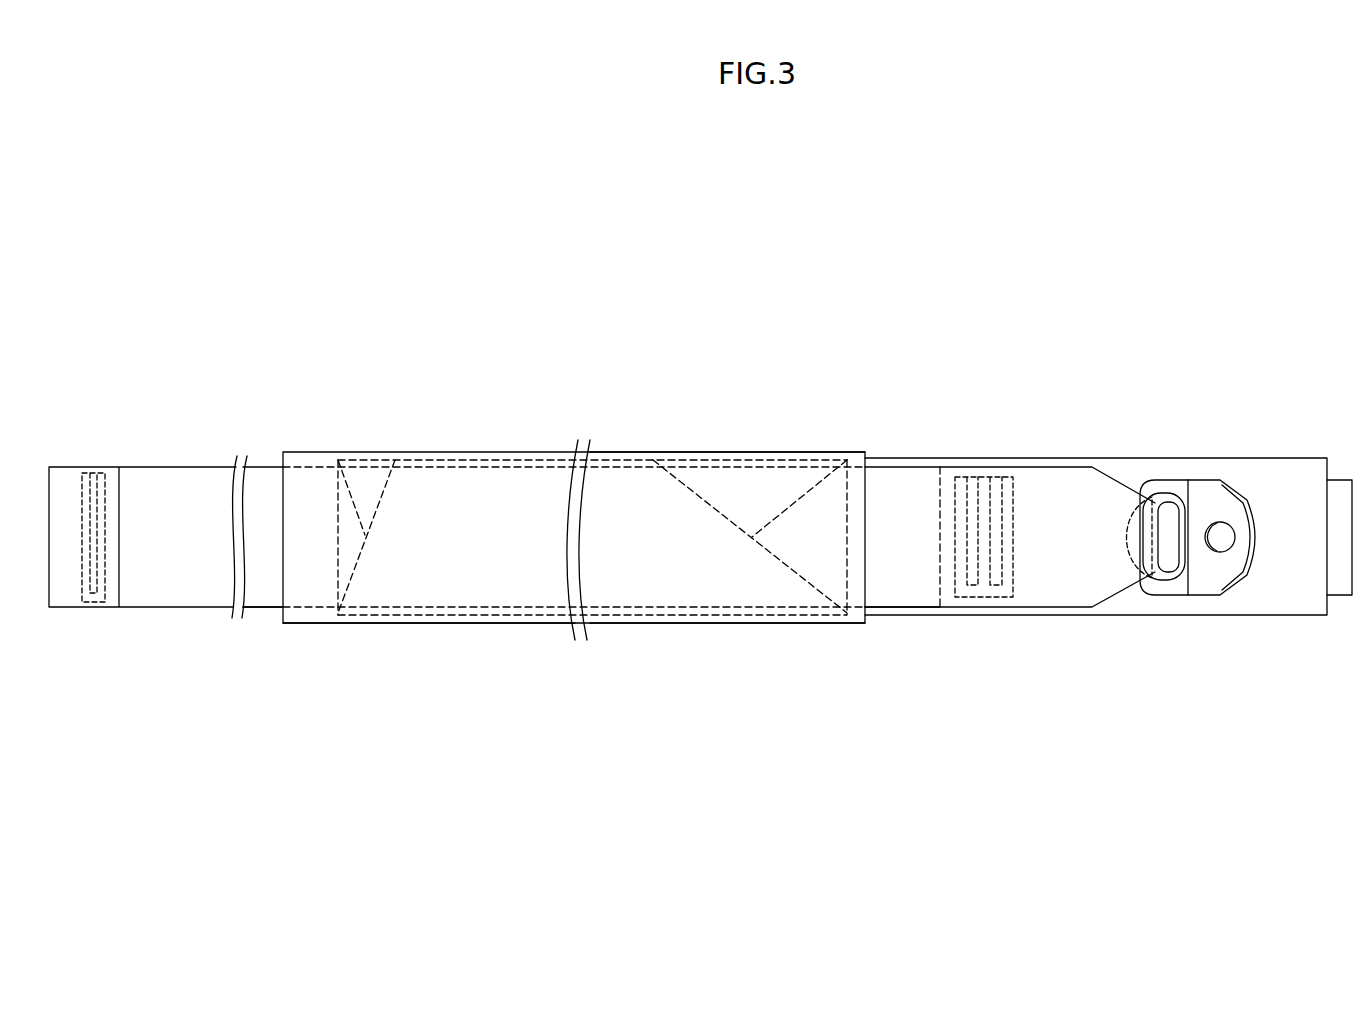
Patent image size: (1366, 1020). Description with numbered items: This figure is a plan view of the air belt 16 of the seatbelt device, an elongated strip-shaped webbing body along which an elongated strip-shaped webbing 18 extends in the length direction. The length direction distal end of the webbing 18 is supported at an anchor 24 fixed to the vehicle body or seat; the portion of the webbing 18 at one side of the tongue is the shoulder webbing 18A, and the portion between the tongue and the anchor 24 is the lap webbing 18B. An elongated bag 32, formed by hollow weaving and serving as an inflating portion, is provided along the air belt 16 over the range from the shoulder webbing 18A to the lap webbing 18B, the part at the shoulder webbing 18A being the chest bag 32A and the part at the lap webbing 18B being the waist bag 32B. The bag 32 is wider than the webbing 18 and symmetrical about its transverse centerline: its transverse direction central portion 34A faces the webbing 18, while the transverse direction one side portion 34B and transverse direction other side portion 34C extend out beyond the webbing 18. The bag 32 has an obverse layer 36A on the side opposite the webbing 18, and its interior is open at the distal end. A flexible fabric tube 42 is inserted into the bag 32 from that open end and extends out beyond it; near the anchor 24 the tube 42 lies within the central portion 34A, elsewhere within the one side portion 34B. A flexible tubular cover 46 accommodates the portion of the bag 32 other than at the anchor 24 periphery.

The air belt 16 is at (356, 340).
The webbing 18 is at (173, 467).
The shoulder webbing 18A is at (270, 607).
The lap webbing 18B is at (900, 607).
The anchor 24 is at (1199, 480).
The bag 32 is at (479, 456).
The chest bag 32A is at (448, 623).
The waist bag 32B is at (780, 618).
The transverse direction central portion 34A is at (337, 500).
The transverse direction one side portion 34B is at (375, 478).
The transverse direction other side portion 34C is at (531, 600).
The obverse layer 36A is at (672, 600).
The tube 42 is at (1341, 480).
The cover 46 is at (769, 452).